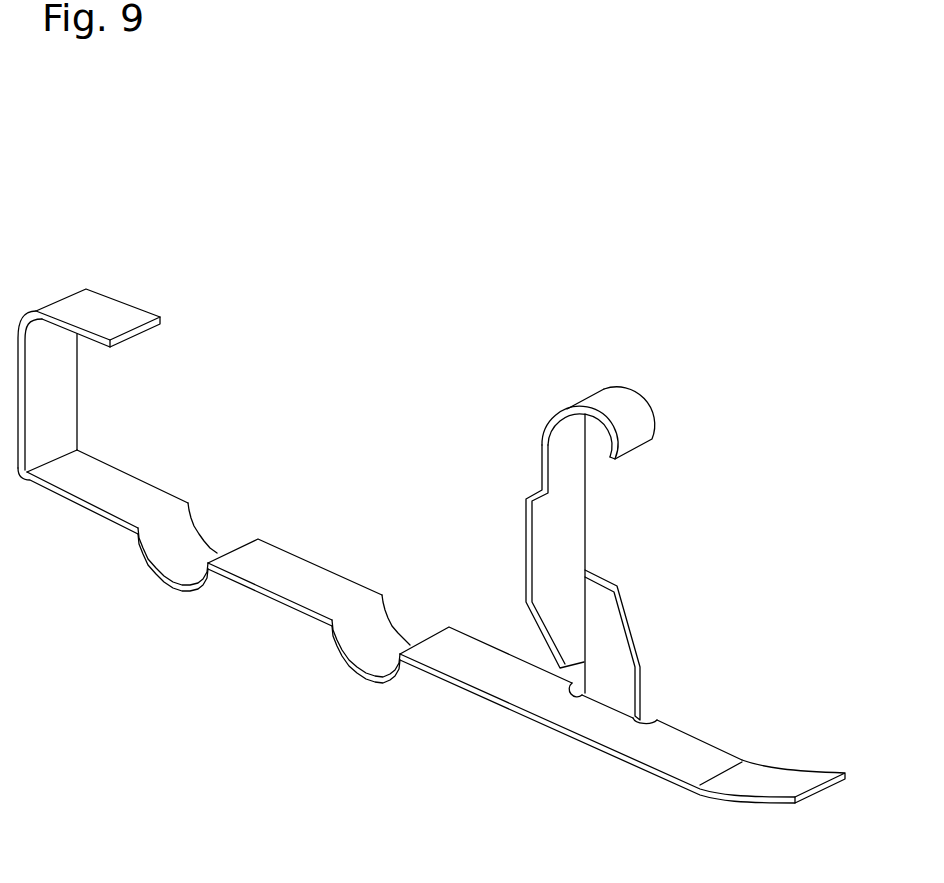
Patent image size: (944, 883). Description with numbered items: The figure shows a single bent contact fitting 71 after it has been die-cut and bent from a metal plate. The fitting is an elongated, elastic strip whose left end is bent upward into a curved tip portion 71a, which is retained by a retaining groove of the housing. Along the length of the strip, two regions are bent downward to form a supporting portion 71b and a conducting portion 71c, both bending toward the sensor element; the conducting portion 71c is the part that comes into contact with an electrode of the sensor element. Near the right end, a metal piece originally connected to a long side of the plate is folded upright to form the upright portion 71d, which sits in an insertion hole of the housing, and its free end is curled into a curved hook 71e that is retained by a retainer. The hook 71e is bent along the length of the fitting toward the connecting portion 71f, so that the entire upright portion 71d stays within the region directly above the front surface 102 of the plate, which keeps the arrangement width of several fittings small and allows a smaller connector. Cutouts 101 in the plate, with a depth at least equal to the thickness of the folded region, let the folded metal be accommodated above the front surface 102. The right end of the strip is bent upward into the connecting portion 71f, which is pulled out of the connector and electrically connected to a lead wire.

The contact fitting 71 is at (431, 510).
The tip portion 71a is at (110, 312).
The supporting portion 71b is at (198, 543).
The conducting portion 71c is at (393, 635).
The upright portion 71d is at (689, 449).
The hook 71e is at (610, 414).
The connecting portion 71f is at (767, 777).
The cutouts 101 is at (650, 723).
The front surface 102 is at (668, 743).